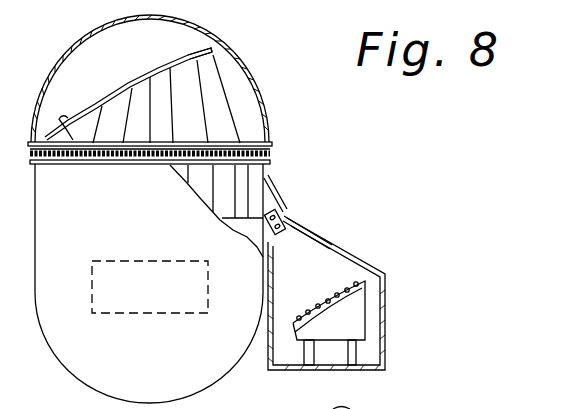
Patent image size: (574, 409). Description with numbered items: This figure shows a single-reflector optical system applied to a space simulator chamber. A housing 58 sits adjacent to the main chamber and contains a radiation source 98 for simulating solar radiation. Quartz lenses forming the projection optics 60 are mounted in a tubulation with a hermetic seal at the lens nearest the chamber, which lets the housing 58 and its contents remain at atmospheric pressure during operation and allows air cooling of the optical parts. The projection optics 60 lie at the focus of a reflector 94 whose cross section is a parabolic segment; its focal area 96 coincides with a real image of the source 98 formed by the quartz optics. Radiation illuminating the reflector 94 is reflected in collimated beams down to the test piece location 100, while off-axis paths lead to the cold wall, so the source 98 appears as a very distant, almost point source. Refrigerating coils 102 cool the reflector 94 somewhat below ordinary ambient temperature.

The housing 58 is at (338, 251).
The projection optics 60 is at (291, 224).
The reflector 94 is at (215, 51).
The focal area 96 is at (277, 213).
The radiation source 98 is at (324, 305).
The test piece location 100 is at (172, 298).
The refrigerating coils 102 is at (122, 82).